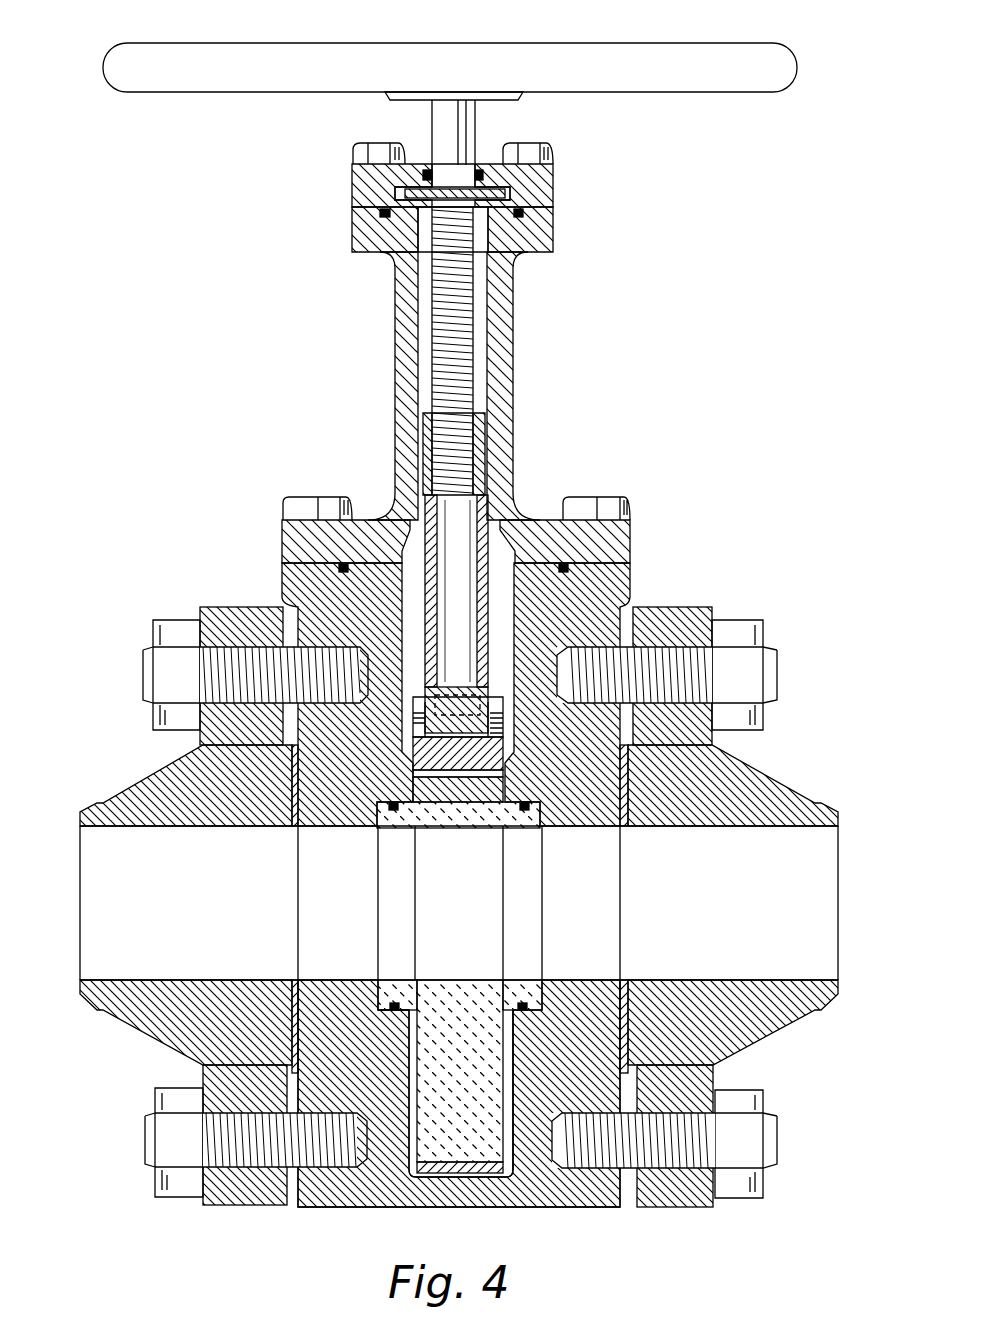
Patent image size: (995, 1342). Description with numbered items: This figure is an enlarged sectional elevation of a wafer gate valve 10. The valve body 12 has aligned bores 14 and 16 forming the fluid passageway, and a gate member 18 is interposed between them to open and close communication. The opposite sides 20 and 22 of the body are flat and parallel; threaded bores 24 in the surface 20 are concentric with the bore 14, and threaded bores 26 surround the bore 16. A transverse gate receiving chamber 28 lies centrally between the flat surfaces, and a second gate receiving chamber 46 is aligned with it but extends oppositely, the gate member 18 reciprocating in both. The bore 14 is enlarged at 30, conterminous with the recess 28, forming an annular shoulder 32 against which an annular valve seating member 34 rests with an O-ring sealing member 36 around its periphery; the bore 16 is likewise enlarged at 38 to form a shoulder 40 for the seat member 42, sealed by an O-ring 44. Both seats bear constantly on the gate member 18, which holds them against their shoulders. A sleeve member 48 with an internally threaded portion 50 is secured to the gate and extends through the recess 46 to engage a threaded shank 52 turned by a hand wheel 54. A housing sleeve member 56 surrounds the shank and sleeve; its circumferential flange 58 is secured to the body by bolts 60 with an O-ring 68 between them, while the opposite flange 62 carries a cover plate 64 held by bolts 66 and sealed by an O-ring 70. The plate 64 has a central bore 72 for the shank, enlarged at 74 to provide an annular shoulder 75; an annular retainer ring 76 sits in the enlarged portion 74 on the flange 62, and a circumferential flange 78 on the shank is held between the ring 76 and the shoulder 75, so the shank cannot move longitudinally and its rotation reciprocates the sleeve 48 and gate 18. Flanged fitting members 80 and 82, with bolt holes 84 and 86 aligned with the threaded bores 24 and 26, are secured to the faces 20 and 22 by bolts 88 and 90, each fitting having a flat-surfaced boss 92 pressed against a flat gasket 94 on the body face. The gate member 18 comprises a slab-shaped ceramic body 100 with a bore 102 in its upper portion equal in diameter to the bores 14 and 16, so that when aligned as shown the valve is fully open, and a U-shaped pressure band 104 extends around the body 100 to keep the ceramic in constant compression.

The wafer gate valve 10 is at (545, 492).
The valve body 12 is at (370, 1180).
The bore 14 is at (358, 830).
The bore 16 is at (606, 982).
The gate member 18 is at (460, 1016).
The side 20 is at (290, 808).
The side 22 is at (630, 1013).
The threaded bores 24 is at (320, 1150).
The threaded bores 26 is at (636, 1180).
The gate receiving chamber 28 is at (513, 1115).
The enlarged bore portion 30 is at (388, 985).
The annular shoulder 32 is at (393, 812).
The valve seating member 34 is at (396, 1003).
The seat ring shoulder 36 is at (405, 1005).
The enlarged bore portion 38 is at (525, 1003).
The annular shoulder 40 is at (527, 812).
The valve seat member 42 is at (508, 1000).
The O-ring 44 is at (504, 830).
The gate receiving chamber 46 is at (515, 638).
The sleeve member 48 is at (490, 500).
The internally threaded portion 50 is at (462, 418).
The threaded shank 52 is at (473, 315).
The hand wheel 54 is at (658, 57).
The housing sleeve member 56 is at (408, 330).
The circumferential flange 58 is at (635, 530).
The bolts 60 is at (595, 503).
The circumferential flange 62 is at (553, 240).
The cover plate 64 is at (365, 196).
The bolts 66 is at (548, 163).
The O-ring 68 is at (340, 571).
The O-ring 70 is at (384, 217).
The central bore 72 is at (458, 163).
The enlarged bore portion 74 is at (512, 197).
The annular shoulder 75 is at (426, 170).
The annular retainer ring 76 is at (412, 225).
The circumferential flange 78 is at (466, 193).
The flanged fitting member 80 is at (170, 1018).
The flanged fitting member 82 is at (770, 1012).
The bolt holes 84 is at (275, 690).
The bolt holes 86 is at (670, 680).
The bolts 88 is at (172, 630).
The bolts 90 is at (740, 632).
The boss 92 is at (634, 660).
The flat gasket 94 is at (628, 795).
The slab-shaped body 100 is at (470, 815).
The bore 102 is at (506, 985).
The U-shaped pressure band 104 is at (458, 1174).